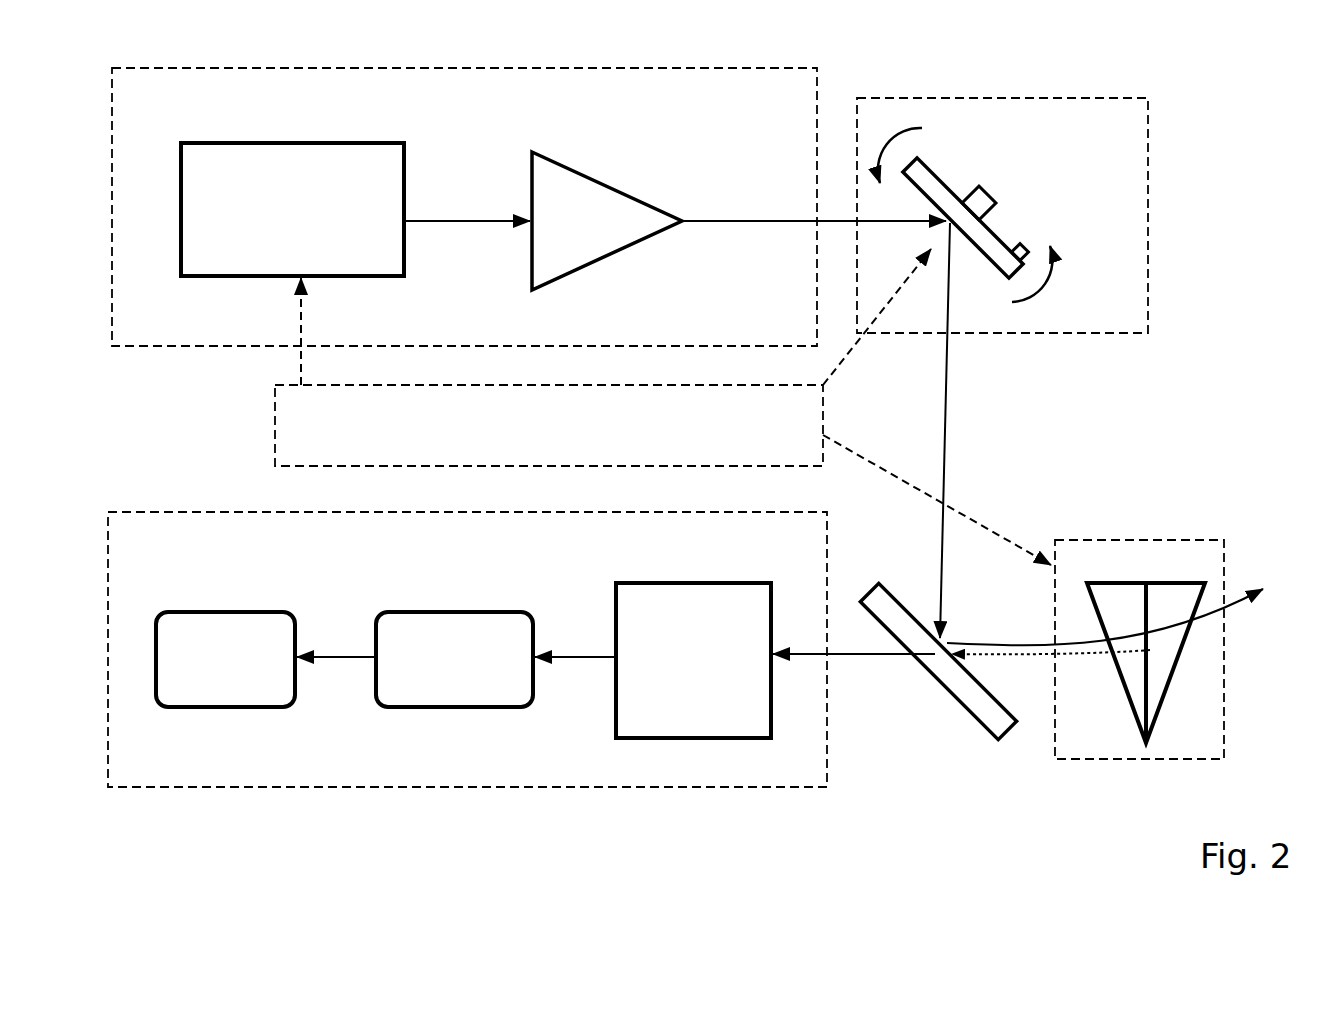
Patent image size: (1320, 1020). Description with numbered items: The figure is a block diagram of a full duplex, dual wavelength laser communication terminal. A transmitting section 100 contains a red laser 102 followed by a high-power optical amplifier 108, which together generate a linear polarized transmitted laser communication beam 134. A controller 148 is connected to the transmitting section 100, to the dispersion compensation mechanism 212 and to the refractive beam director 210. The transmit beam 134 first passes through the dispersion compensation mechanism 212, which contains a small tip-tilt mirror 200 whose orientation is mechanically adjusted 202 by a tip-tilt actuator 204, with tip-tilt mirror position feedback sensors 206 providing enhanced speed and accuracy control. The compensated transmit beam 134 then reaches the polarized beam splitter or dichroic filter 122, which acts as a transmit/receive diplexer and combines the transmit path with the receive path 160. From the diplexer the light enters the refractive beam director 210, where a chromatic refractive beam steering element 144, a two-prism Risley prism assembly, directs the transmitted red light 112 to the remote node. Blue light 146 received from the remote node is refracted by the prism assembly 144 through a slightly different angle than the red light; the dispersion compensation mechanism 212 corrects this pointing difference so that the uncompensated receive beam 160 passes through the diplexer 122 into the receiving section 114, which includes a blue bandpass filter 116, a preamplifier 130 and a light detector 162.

The transmitting section 100 is at (820, 93).
The red laser 102 is at (405, 175).
The high-power optical amplifier 108 is at (585, 173).
The transmitted beam 112 is at (1243, 610).
The receiving section 114 is at (192, 511).
The blue bandpass filter 116 is at (725, 583).
The polarized beam splitter or dichroic filter 122 is at (900, 600).
The preamplifier 130 is at (440, 612).
The transmitted laser communication beam 134 is at (948, 403).
The refractive beam steering element 144 is at (1177, 576).
The received blue light 146 is at (1008, 657).
The controller 148 is at (275, 407).
The receive path 160 is at (862, 657).
The light detector 162 is at (197, 612).
The tip-tilt mirror 200 is at (937, 175).
The mechanical adjustment 202 is at (1060, 291).
The tip-tilt actuator 204 is at (993, 187).
The tip-tilt mirror position feedback sensors 206 is at (1027, 247).
The refractive beam director 210 is at (1136, 540).
The dispersion compensation mechanism 212 is at (1148, 163).